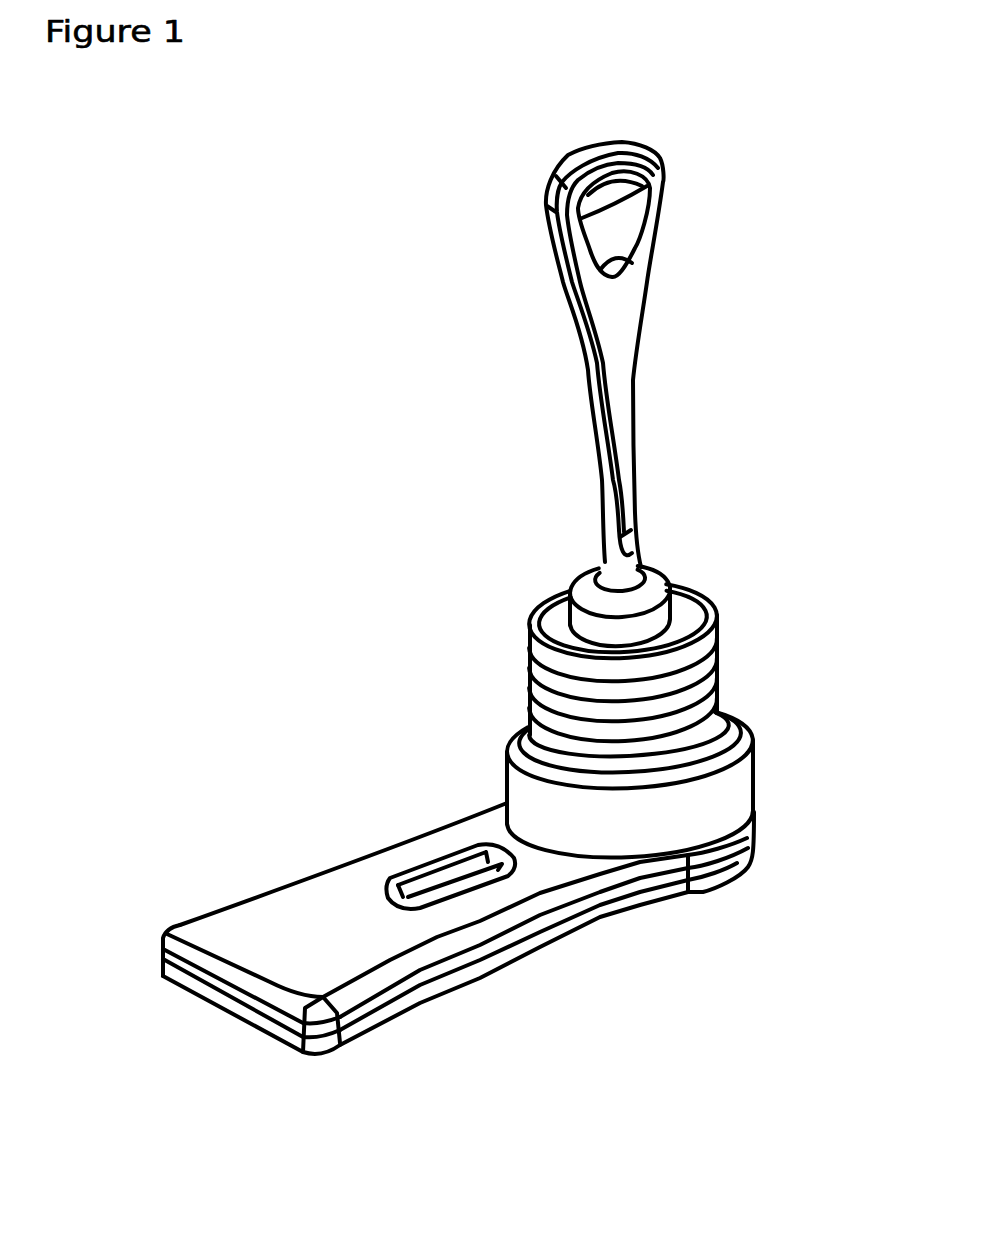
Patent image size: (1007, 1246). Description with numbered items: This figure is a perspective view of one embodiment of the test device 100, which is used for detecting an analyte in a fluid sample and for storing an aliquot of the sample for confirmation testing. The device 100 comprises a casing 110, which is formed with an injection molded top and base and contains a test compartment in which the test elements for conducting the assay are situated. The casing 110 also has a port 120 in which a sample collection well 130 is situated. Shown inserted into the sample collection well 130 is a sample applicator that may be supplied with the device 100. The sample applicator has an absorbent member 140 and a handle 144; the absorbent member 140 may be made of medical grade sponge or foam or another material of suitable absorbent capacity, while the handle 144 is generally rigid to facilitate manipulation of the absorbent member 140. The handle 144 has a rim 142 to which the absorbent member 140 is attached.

The device 100 is at (252, 339).
The casing 110 is at (288, 891).
The port 120 is at (520, 708).
The sample collection well 130 is at (748, 665).
The absorbent member 140 is at (658, 636).
The rim 142 is at (667, 574).
The handle 144 is at (648, 311).